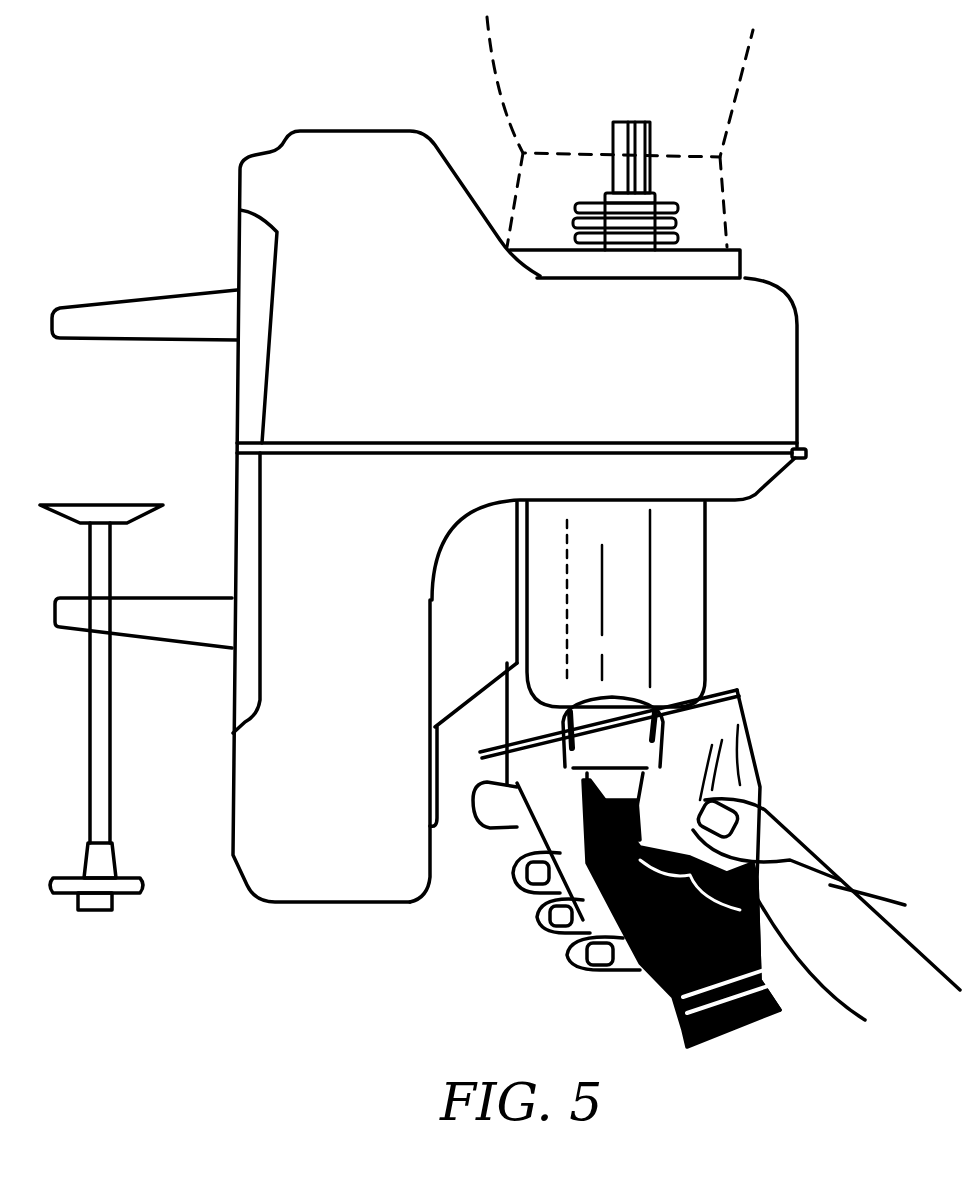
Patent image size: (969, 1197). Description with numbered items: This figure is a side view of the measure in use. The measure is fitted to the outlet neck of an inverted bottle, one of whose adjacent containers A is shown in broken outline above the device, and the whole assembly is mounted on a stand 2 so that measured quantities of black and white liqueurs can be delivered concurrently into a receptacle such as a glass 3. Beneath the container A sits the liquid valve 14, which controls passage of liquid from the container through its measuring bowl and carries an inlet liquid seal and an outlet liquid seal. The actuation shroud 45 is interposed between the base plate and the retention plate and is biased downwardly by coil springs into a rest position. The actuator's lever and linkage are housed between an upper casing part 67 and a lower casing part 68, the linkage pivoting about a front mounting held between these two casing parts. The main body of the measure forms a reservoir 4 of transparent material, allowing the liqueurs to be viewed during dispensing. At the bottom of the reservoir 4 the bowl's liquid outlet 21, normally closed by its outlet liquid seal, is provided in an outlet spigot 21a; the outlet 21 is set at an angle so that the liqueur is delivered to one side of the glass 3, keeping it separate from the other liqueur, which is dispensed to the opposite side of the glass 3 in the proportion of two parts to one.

The stand 2 is at (200, 873).
The upper casing part 67 is at (773, 388).
The actuation shroud 45 is at (740, 267).
The lower casing part 68 is at (757, 477).
The liquid valve 14 is at (643, 143).
The container A is at (753, 60).
The reservoir 4 is at (705, 622).
The outlet spigot 21a is at (563, 733).
The liquid outlet 21 is at (560, 827).
The glass 3 is at (735, 732).